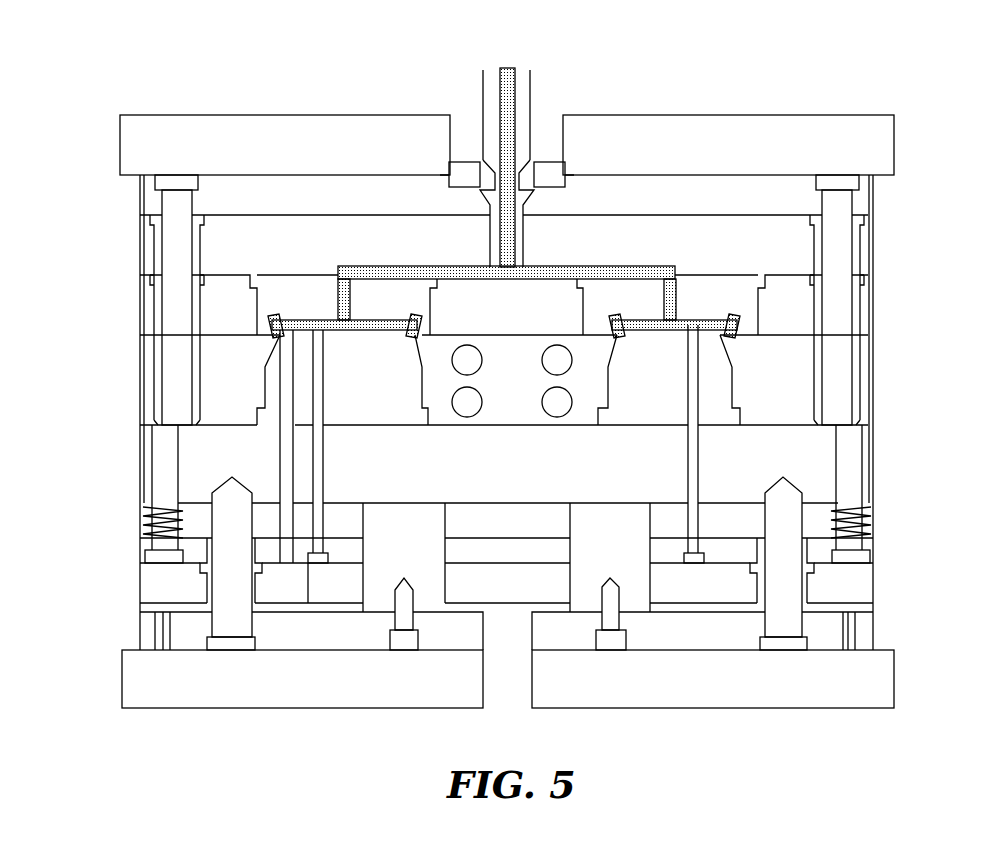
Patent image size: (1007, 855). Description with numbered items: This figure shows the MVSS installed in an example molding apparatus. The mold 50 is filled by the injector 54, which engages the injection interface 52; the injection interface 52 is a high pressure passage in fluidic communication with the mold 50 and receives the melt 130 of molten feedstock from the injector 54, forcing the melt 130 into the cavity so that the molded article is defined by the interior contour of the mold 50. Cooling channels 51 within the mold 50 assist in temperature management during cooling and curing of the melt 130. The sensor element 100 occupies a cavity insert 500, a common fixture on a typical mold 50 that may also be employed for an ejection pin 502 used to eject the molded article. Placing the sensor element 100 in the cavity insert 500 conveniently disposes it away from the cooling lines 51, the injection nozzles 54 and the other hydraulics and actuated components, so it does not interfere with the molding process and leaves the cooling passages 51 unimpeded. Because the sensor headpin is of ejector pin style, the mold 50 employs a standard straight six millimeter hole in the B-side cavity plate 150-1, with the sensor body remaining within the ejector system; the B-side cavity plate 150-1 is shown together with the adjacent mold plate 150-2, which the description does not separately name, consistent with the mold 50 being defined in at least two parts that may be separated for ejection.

The mold 50 is at (906, 341).
The cooling channels 51 is at (541, 404).
The injection interface 52 is at (468, 132).
The injector 54 is at (483, 78).
The sensor element 100 is at (262, 460).
The melt 130 is at (328, 318).
The B-side cavity plate 150-1 is at (227, 377).
The cavity plate 150-2 is at (215, 307).
The cavity insert 500 is at (400, 418).
The ejection pin 502 is at (318, 480).